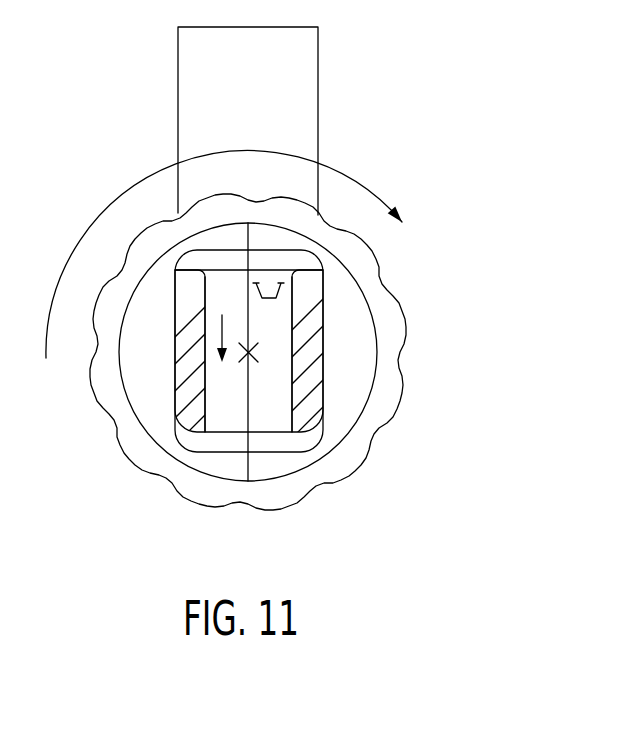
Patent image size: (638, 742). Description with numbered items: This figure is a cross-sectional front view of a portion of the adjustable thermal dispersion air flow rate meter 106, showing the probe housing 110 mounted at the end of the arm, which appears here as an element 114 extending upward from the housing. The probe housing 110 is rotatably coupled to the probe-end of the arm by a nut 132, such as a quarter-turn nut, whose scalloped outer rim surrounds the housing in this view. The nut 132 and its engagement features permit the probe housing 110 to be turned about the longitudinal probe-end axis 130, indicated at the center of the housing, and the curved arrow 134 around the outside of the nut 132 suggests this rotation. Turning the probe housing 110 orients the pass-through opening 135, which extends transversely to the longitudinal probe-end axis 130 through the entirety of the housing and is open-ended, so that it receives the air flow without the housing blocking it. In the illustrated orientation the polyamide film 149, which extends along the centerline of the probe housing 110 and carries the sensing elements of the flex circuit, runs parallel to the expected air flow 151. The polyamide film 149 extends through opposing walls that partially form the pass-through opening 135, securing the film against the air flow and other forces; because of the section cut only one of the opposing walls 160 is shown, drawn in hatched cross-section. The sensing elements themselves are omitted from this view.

The thermal dispersion air flow rate meter 106 is at (436, 103).
The shaft 114 is at (318, 97).
The nut 132 is at (148, 228).
The rotation direction 134 is at (348, 178).
The probe housing 110 is at (150, 313).
The polyamide film 149 is at (248, 405).
The expected air flow 151 is at (185, 337).
The opposing wall 160 is at (277, 323).
The pass-through opening 135 is at (279, 283).
The longitudinal probe-end axis 130 is at (258, 353).